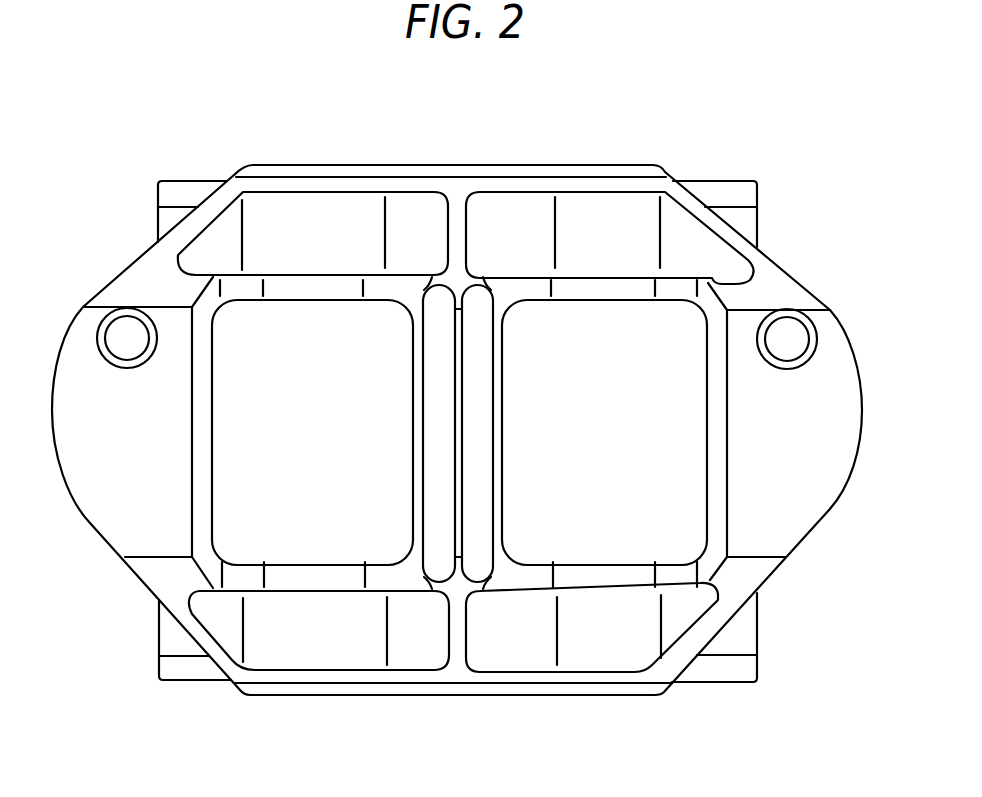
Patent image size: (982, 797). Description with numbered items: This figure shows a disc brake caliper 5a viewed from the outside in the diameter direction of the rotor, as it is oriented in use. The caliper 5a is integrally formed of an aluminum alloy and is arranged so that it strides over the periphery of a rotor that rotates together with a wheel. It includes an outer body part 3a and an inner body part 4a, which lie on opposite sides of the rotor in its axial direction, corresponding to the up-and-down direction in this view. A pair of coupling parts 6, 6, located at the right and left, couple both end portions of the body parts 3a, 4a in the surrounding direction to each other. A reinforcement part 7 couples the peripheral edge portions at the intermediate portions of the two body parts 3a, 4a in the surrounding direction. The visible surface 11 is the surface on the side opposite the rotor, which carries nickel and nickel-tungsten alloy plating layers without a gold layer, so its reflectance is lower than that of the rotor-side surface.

The outer body part 3a is at (340, 635).
The inner body part 4a is at (313, 223).
The disc brake caliper 5a is at (812, 168).
The coupling part 6 is at (133, 460).
The reinforcement part 7 is at (477, 448).
The surface on the opposite side to the rotor-side 11 is at (770, 502).